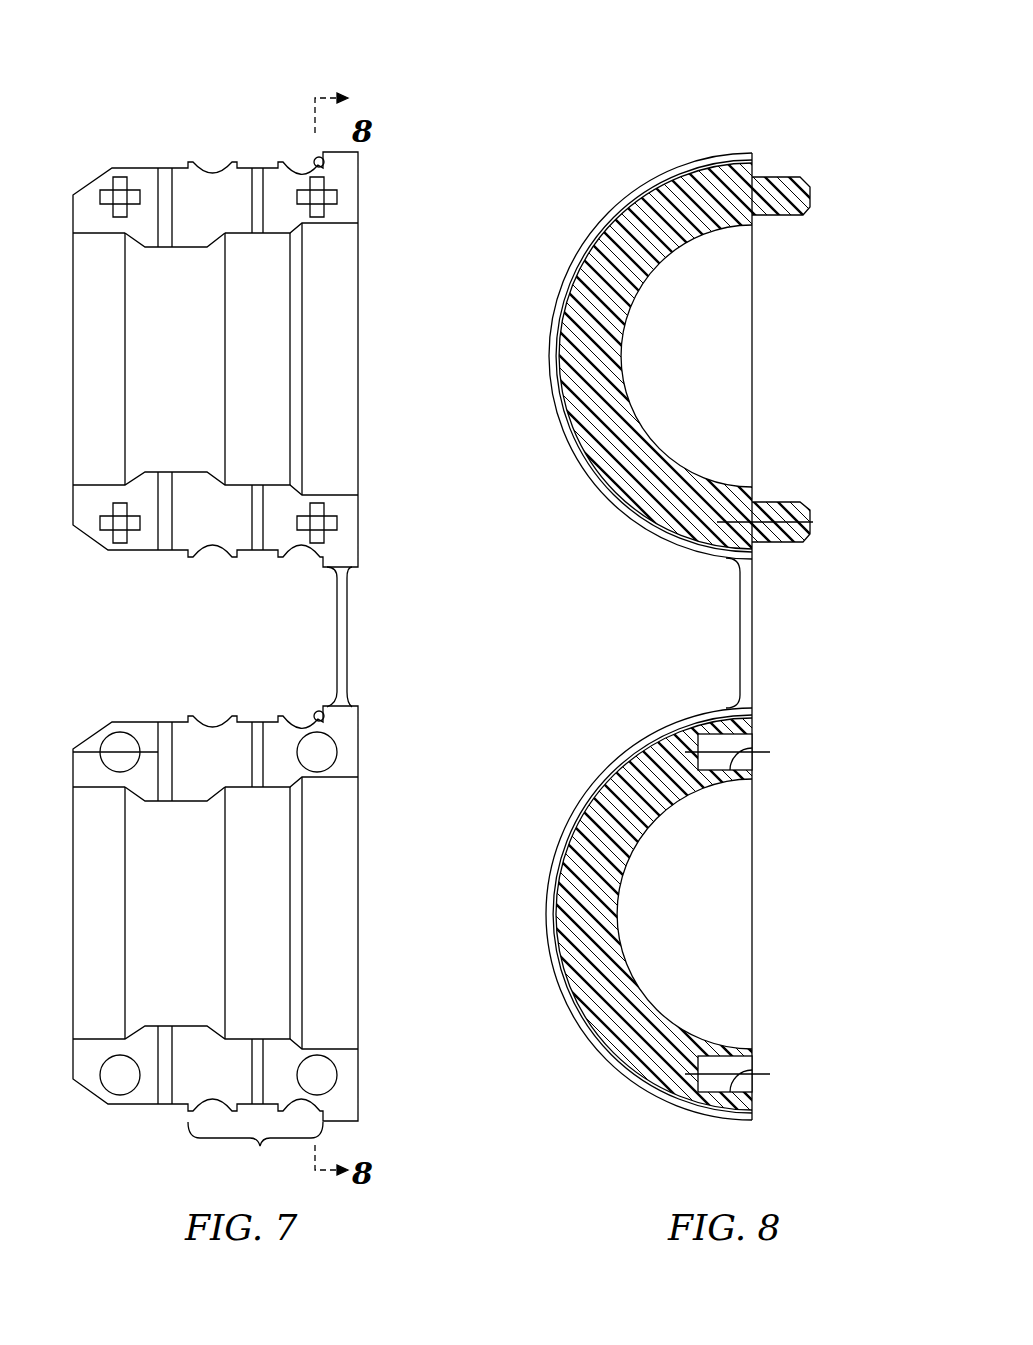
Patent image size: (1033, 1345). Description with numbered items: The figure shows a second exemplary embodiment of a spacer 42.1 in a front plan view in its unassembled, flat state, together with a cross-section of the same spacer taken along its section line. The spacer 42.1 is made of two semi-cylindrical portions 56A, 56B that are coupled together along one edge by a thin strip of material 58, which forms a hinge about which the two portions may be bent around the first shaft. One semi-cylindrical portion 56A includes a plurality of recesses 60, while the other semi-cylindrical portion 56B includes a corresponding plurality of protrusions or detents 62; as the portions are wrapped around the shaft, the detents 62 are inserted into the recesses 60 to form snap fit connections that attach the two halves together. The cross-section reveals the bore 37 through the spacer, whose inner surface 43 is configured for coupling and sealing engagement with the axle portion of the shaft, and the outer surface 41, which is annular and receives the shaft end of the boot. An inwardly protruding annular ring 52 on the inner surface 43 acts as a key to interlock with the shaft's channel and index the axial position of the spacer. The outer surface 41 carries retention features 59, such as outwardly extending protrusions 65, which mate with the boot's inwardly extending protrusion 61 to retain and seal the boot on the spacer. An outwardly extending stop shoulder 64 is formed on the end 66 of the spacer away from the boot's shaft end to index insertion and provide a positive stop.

In FIG. 7, the spacer 42.1 is at (285, 97).
In FIG. 8, the spacer 42.1 is at (734, 100).
In FIG. 7, the bore 37 is at (340, 363).
In FIG. 8, the bore 37 is at (715, 428).
In FIG. 7, the outer surface 41 is at (238, 629).
In FIG. 8, the outer surface 41 is at (643, 672).
In FIG. 7, the inner surface 43 is at (335, 488).
In FIG. 8, the inner surface 43 is at (625, 345).
In FIG. 7, the inwardly protruding annular ring 52 is at (150, 248).
In FIG. 7, the semi-cylindrical portion 56A is at (134, 723).
In FIG. 8, the semi-cylindrical portion 56A is at (555, 902).
In FIG. 7, the semi-cylindrical portion 56B is at (140, 551).
In FIG. 8, the semi-cylindrical portion 56B is at (624, 378).
In FIG. 7, the thin strip of material 58 is at (337, 612).
In FIG. 8, the thin strip of material 58 is at (740, 637).
In FIG. 7, the retention feature 59 is at (258, 1148).
In FIG. 7, the recess 60 is at (108, 742).
In FIG. 8, the recess 60 is at (756, 748).
In FIG. 7, the inwardly extending protrusion 61 is at (212, 727).
In FIG. 7, the protrusion or detent 62 is at (121, 180).
In FIG. 8, the protrusion or detent 62 is at (780, 176).
In FIG. 7, the stop shoulder 64 is at (325, 165).
In FIG. 7, the outwardly extending protrusion 65 is at (233, 727).
In FIG. 7, the end 66 is at (356, 742).